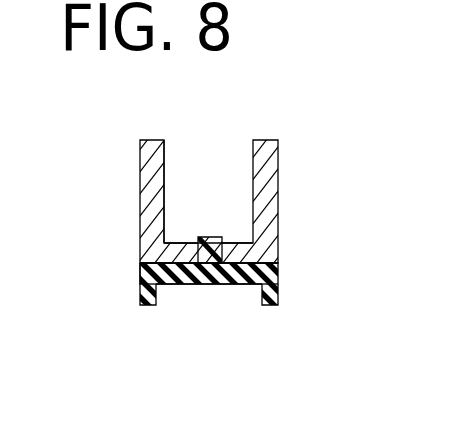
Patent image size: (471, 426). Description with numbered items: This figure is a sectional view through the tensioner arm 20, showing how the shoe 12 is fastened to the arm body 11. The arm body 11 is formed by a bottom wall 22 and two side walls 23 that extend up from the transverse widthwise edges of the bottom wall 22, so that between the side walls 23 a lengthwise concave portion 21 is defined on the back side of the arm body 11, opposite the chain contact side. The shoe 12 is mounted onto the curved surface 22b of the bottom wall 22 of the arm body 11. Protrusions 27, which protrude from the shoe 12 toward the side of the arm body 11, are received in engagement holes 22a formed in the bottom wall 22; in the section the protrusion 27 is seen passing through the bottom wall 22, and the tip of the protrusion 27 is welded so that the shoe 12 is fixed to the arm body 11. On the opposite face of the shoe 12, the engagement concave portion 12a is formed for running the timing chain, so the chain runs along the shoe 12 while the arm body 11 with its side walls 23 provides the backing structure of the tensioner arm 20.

The tensioner arm 20 is at (243, 117).
The arm body 11 is at (281, 212).
The side walls 23 is at (140, 160).
The lengthwise concave portion 21 is at (165, 180).
The bottom wall 22 is at (183, 237).
The protrusions 27 is at (258, 252).
The shoe 12 is at (281, 277).
The engagement concave portion 12a is at (264, 297).
The engagement holes 22a is at (200, 284).
The curved surface 22b is at (140, 283).